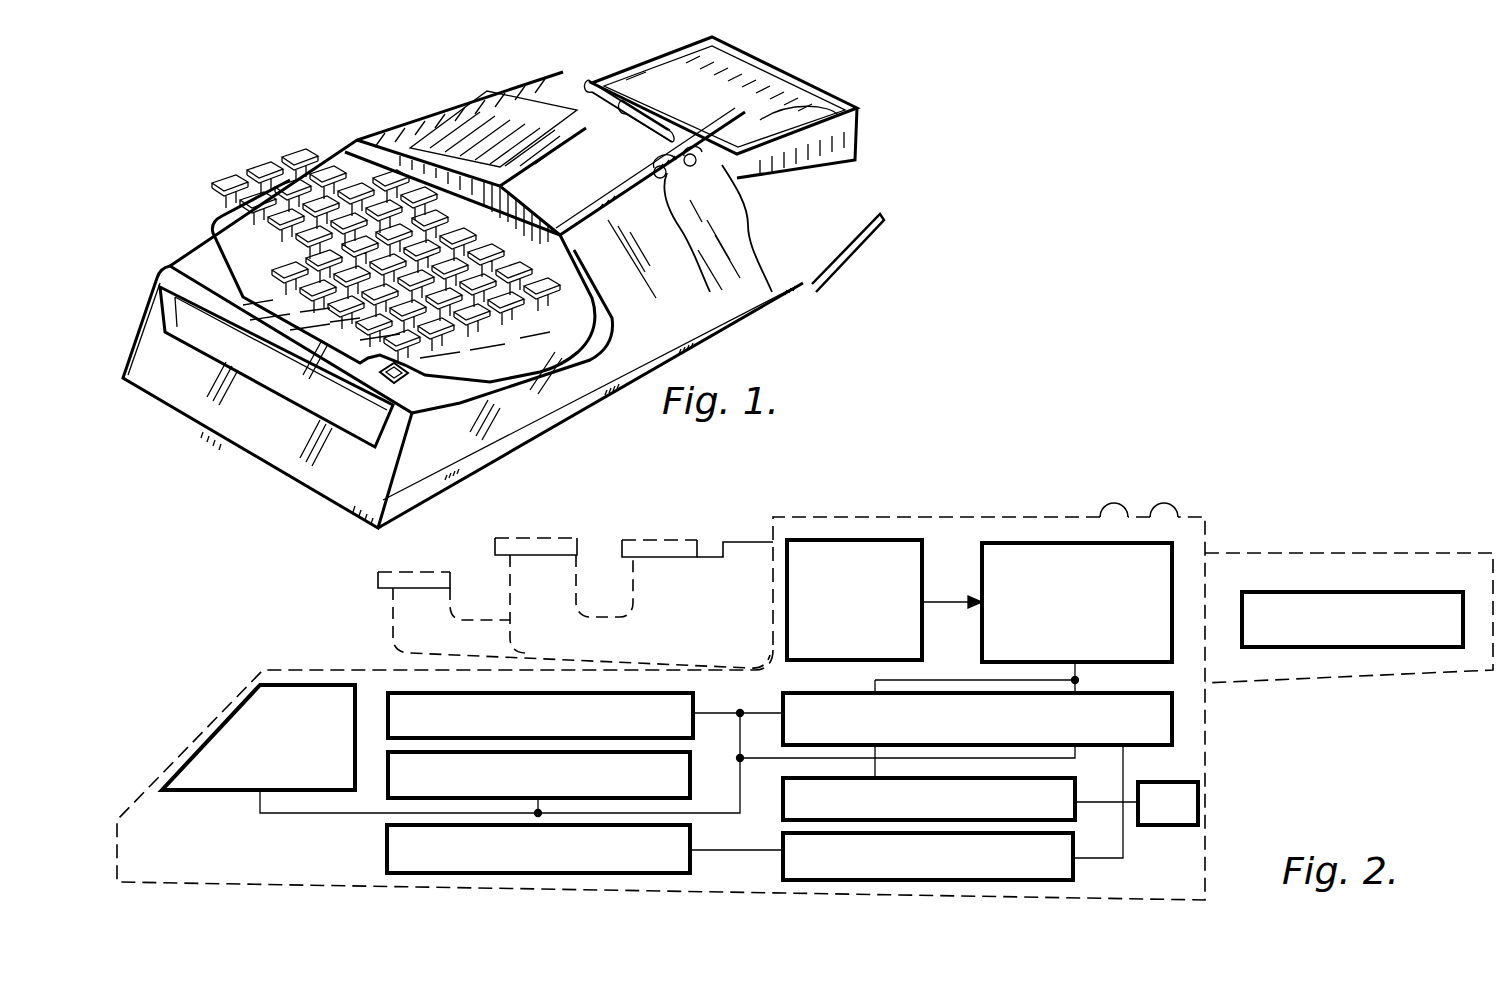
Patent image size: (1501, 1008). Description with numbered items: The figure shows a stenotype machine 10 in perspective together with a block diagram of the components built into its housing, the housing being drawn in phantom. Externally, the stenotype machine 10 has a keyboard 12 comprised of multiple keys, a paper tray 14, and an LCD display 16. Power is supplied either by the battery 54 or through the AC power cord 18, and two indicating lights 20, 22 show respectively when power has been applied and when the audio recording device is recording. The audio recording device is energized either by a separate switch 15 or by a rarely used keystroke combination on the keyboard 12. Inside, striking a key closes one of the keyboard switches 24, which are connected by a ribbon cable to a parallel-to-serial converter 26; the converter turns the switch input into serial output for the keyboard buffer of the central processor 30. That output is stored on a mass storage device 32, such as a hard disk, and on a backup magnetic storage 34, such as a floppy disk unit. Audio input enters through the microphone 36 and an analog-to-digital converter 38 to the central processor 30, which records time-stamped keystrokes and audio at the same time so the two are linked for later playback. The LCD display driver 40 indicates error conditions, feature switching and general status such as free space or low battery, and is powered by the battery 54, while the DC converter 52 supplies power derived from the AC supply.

In FIG. 1, the stenotype machine 10 is at (442, 106).
In FIG. 2, the stenotype machine 10 is at (936, 517).
In FIG. 1, the keyboard 12 is at (273, 160).
In FIG. 2, the keyboard 12 is at (637, 548).
In FIG. 1, the paper tray 14 is at (858, 141).
In FIG. 2, the paper tray 14 is at (1332, 597).
In FIG. 1, the switch 15 is at (458, 408).
In FIG. 1, the LCD display 16 is at (325, 392).
In FIG. 1, the AC power cord 18 is at (858, 232).
In FIG. 1, the indicating light 20 is at (707, 268).
In FIG. 2, the indicating light 20 is at (1115, 502).
In FIG. 1, the indicating light 22 is at (777, 270).
In FIG. 2, the indicating light 22 is at (1168, 503).
In FIG. 2, the keyboard switches 24 is at (818, 550).
In FIG. 2, the parallel-to-serial converter 26 is at (1160, 568).
In FIG. 2, the central processor 30 is at (1172, 721).
In FIG. 2, the mass storage device 32 is at (400, 693).
In FIG. 2, the backup magnetic storage 34 is at (680, 759).
In FIG. 2, the microphone 36 is at (1198, 805).
In FIG. 2, the analog-to-digital converter 38 is at (1062, 820).
In FIG. 2, the LCD display driver 40 is at (246, 718).
In FIG. 2, the DC converter 52 is at (1070, 866).
In FIG. 2, the battery 54 is at (405, 849).